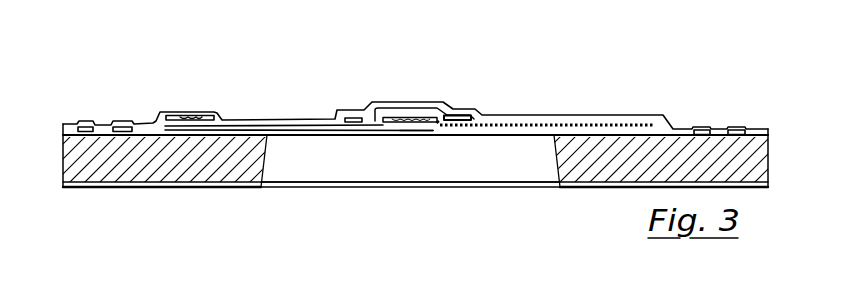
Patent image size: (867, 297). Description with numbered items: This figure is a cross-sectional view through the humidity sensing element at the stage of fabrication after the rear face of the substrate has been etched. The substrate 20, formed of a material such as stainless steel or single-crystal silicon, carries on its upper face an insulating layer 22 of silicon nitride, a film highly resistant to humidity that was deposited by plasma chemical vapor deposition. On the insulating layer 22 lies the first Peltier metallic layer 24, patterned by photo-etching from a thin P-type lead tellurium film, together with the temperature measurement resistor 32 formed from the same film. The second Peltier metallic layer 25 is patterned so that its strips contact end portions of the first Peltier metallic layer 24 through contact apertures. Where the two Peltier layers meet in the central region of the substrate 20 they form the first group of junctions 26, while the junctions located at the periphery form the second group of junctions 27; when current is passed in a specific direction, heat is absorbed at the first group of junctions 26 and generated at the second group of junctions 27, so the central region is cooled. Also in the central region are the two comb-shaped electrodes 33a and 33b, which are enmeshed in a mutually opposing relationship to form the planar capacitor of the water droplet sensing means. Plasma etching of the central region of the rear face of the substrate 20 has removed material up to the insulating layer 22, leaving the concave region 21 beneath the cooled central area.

The substrate 20 is at (770, 166).
The concave region 21 is at (466, 166).
The insulating layer 22 is at (145, 123).
The first Peltier metallic layer 24 is at (267, 121).
The second Peltier metallic layer 25 is at (543, 125).
The first group of junctions 26 is at (408, 132).
The second group of junctions 27 is at (195, 119).
The temperature measurement resistor 32 is at (120, 127).
The comb-shaped electrode 33a is at (353, 118).
The comb-shaped electrode 33b is at (466, 114).